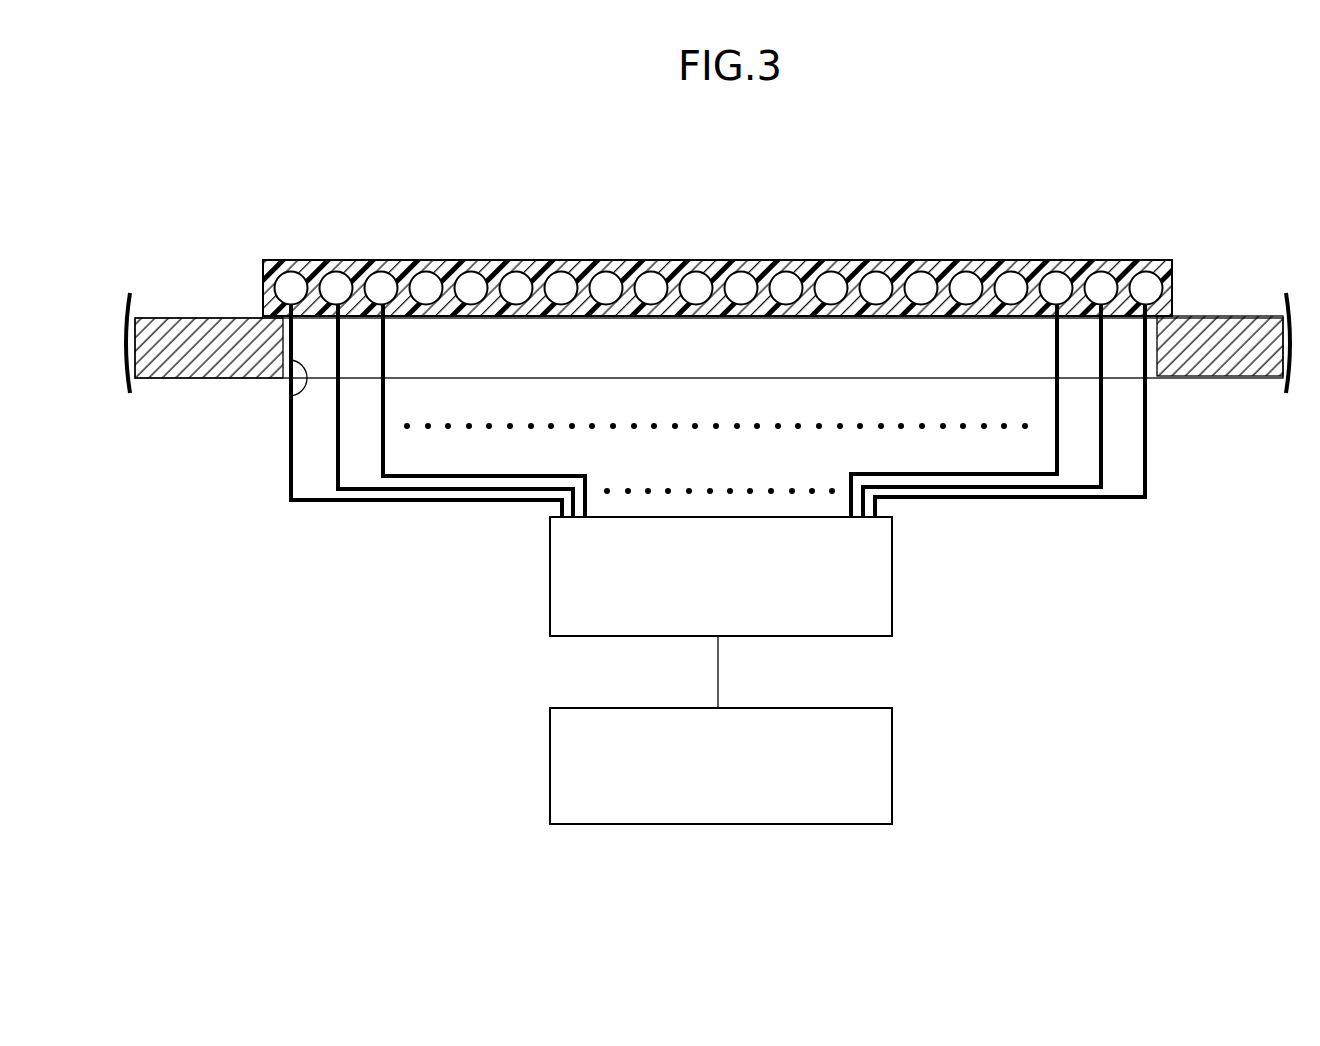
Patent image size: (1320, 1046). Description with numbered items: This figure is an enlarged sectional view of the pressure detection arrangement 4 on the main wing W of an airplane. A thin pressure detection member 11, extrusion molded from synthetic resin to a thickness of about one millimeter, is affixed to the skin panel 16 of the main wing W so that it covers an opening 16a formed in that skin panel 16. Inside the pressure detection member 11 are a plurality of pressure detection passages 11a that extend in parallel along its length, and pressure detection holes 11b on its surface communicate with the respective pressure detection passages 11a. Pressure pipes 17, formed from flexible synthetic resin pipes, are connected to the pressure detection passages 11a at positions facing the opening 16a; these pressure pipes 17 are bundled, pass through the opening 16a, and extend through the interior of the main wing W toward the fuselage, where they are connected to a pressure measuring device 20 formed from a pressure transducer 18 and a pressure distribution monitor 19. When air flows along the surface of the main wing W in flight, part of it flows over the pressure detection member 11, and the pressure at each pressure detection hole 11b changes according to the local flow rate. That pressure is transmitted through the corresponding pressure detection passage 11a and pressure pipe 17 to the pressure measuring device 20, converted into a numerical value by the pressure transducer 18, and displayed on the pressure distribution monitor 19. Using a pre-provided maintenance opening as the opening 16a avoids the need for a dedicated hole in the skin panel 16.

The top ring (substrate holding apparatus) 4 is at (740, 201).
The pressure detection member 11 is at (740, 234).
The pressure detection passages 11a is at (428, 290).
The pressure detection holes 11b is at (512, 268).
The skin panel 16 is at (216, 382).
The opening 16a is at (289, 398).
The pressure pipes 17 is at (455, 478).
The pressure transducer 18 is at (892, 610).
The pressure distribution monitor 19 is at (892, 748).
The pressure measuring device 20 is at (800, 670).
The main wing W is at (219, 266).